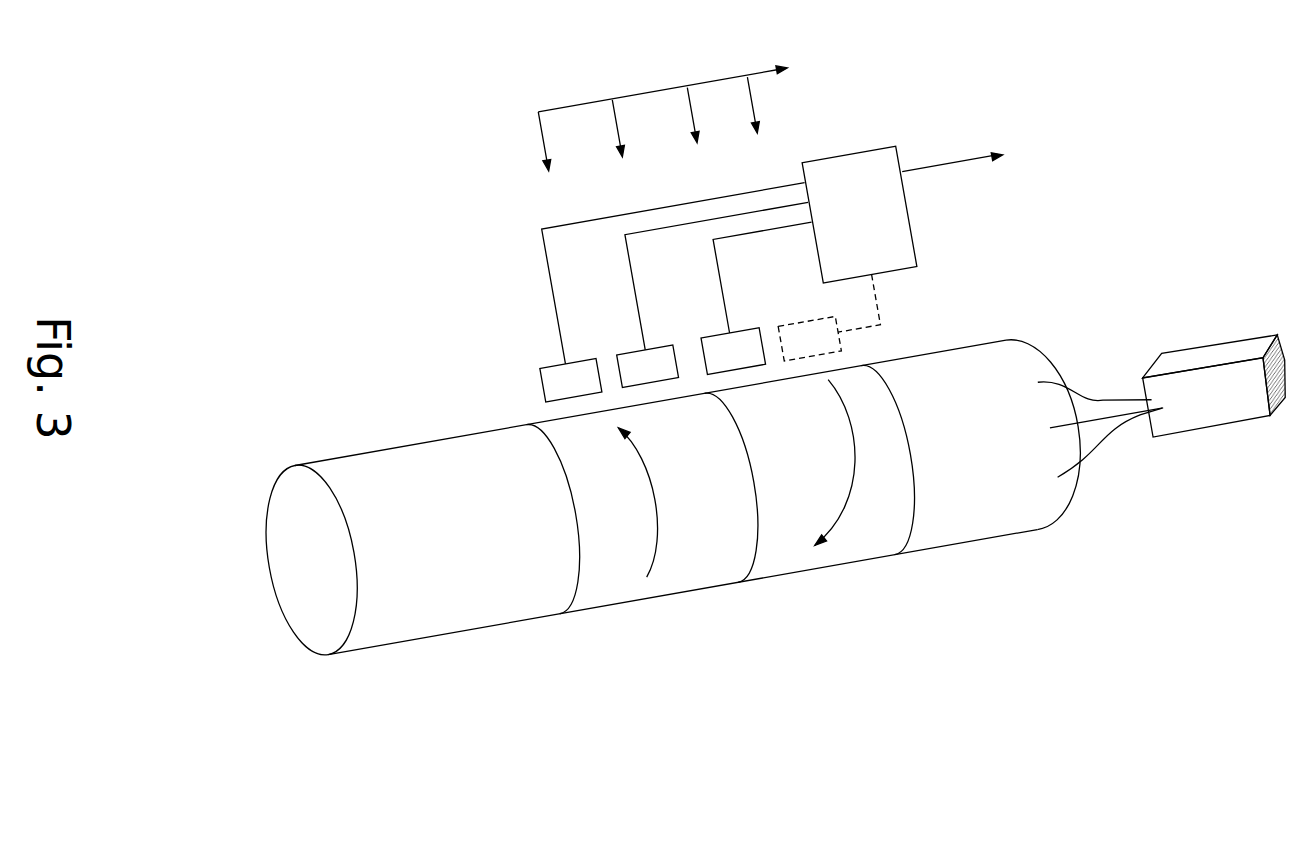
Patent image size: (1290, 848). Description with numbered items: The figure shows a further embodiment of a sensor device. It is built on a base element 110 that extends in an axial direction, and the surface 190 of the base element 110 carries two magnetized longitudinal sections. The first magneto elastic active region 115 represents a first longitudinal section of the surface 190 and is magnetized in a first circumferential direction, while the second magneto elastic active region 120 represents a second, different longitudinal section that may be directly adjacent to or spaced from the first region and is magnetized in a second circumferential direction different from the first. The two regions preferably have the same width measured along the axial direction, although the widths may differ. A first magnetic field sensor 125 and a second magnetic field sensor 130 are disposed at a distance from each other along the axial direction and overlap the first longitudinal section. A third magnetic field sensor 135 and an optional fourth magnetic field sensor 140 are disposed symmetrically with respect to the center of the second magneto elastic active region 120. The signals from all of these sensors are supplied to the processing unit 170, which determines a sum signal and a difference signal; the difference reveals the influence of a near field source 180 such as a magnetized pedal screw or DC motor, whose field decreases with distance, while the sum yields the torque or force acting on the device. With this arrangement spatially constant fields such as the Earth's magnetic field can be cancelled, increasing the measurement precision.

The base element 110 is at (427, 656).
The first magneto elastic active region 115 is at (633, 659).
The second magneto elastic active region 120 is at (831, 660).
The first magnetic field sensor 125 is at (568, 433).
The second magnetic field sensor 130 is at (641, 412).
The third magnetic field sensor 135 is at (738, 302).
The fourth magnetic field sensor 140 is at (816, 306).
The processing unit 170 is at (936, 252).
The near field source 180 is at (1203, 322).
The surface 190 is at (1074, 476).